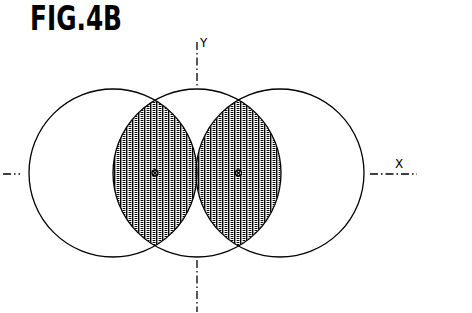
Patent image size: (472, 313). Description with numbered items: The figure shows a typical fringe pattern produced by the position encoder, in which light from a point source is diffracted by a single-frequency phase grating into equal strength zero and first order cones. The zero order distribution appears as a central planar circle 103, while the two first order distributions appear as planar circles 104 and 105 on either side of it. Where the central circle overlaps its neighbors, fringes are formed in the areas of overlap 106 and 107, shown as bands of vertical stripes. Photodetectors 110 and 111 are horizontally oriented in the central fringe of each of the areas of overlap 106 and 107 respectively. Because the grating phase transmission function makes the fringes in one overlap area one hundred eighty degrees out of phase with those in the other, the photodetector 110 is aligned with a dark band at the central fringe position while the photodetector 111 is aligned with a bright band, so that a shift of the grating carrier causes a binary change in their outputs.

The planar circle 103 is at (206, 258).
The planar circle 104 is at (133, 256).
The planar circle 105 is at (301, 257).
The area of overlap 106 is at (147, 107).
The area of overlap 107 is at (241, 104).
The photodetector 110 is at (152, 174).
The photodetector 111 is at (242, 173).